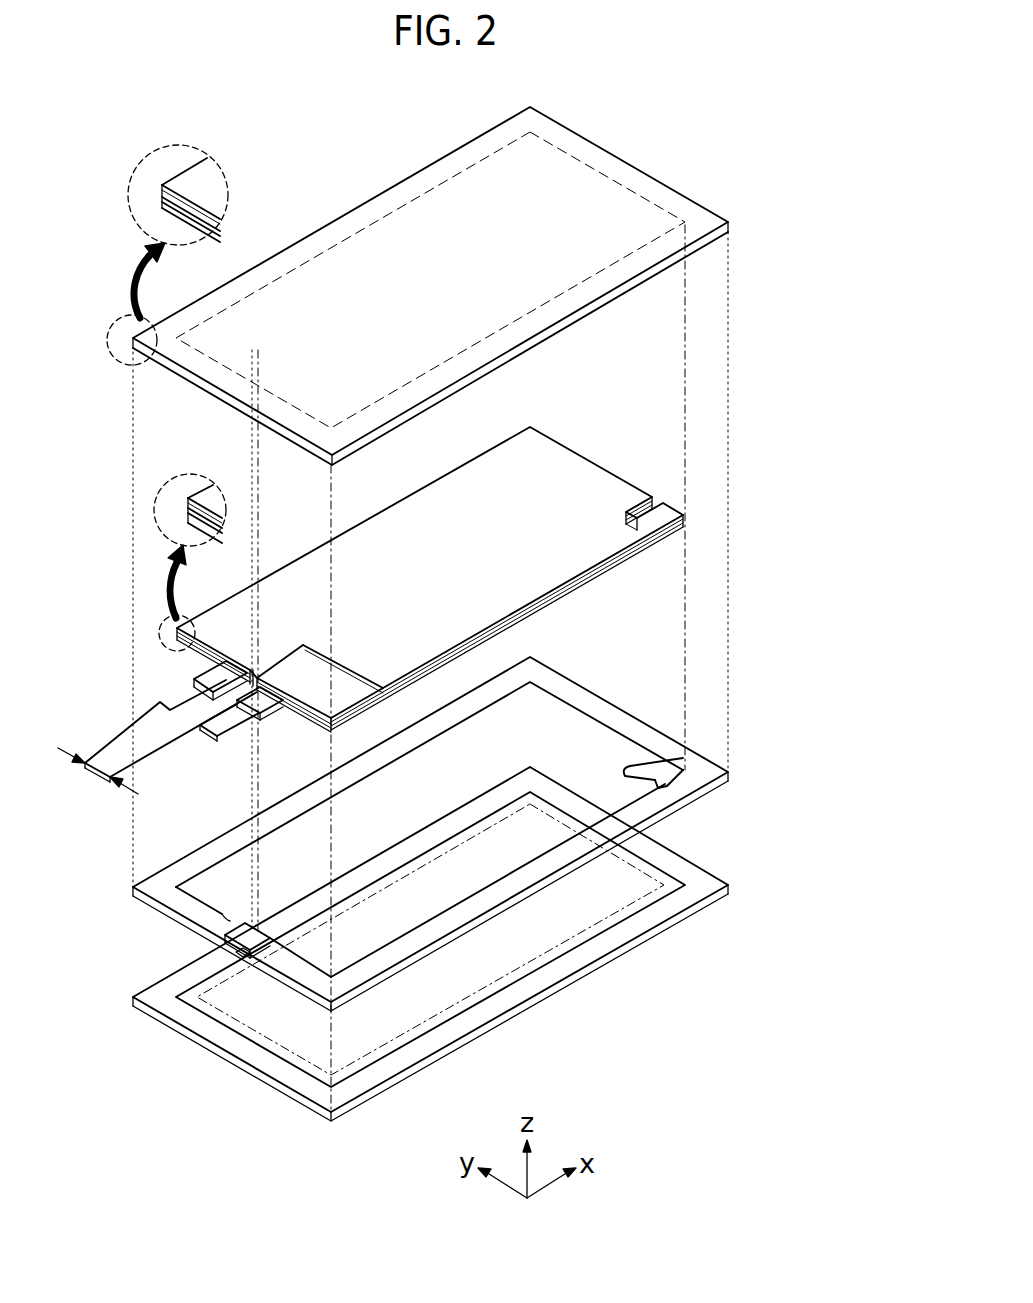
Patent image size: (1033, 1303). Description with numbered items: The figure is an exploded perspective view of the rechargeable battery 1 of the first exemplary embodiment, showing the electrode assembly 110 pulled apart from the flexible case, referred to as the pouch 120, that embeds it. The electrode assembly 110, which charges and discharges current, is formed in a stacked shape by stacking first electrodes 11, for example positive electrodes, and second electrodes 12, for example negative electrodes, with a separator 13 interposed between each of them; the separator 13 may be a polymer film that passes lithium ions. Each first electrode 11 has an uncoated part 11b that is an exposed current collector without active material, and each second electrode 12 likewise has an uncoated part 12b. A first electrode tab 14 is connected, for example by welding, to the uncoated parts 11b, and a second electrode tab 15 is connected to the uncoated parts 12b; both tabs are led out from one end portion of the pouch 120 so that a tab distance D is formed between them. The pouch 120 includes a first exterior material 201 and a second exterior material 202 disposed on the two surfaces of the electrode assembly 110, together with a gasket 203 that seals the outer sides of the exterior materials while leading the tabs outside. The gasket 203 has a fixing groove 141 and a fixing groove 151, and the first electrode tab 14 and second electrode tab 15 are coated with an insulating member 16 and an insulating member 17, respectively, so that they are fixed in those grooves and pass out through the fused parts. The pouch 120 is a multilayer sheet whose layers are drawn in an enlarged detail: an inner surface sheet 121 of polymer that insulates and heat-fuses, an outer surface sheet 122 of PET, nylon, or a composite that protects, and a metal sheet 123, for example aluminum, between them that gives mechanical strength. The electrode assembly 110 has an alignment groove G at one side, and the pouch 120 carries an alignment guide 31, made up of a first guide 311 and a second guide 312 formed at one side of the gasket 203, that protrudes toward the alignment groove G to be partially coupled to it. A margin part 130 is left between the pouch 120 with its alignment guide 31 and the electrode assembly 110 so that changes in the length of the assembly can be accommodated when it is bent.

The rechargeable battery 1 is at (351, 113).
The electrode assembly 110 is at (430, 557).
The first electrode 11 is at (190, 524).
The second electrode 12 is at (205, 497).
The separator 13 is at (195, 510).
The uncoated part 11b is at (315, 685).
The uncoated part 12b is at (238, 632).
The first electrode tab 14 is at (217, 722).
The second electrode tab 15 is at (157, 698).
The insulating member 16 is at (260, 698).
The insulating member 17 is at (207, 672).
The tab distance D is at (98, 773).
The alignment groove G is at (632, 514).
The pouch 120 is at (757, 1075).
The inner surface sheet 121 is at (162, 207).
The outer surface sheet 122 is at (162, 187).
The metal sheet 123 is at (162, 198).
The margin part 130 is at (677, 888).
The fixing groove 141 is at (243, 957).
The fixing groove 151 is at (230, 930).
The first exterior material 201 is at (468, 944).
The second exterior material 202 is at (703, 215).
The gasket 203 is at (462, 868).
The alignment guide 31 is at (728, 795).
The first guide 311 is at (637, 770).
The second guide 312 is at (667, 777).